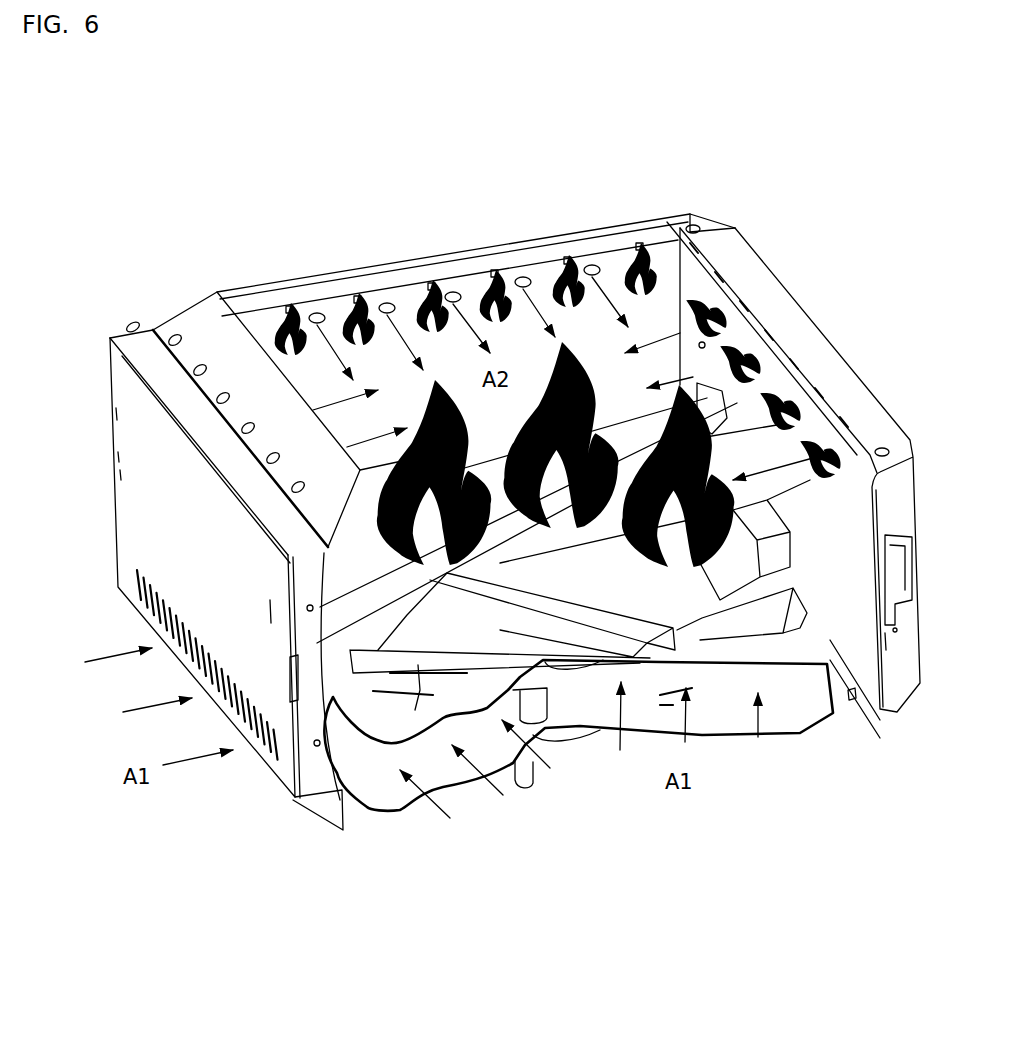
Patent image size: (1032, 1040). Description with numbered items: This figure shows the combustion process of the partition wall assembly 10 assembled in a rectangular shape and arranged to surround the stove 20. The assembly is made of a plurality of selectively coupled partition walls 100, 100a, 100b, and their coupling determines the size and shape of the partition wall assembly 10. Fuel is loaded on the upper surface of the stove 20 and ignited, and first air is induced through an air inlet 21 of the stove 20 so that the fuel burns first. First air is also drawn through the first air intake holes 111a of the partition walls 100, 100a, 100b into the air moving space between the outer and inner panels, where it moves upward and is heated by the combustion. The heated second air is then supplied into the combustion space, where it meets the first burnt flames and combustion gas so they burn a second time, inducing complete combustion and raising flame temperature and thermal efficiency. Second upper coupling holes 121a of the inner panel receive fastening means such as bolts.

The partition wall assembly 10 is at (684, 166).
The partition wall 100 is at (808, 337).
The partition wall 100a is at (183, 316).
The partition wall 100b is at (145, 500).
The first air intake holes 111a is at (140, 618).
The second upper coupling holes 121a is at (597, 270).
The stove 20 is at (520, 677).
The air inlet 21 is at (423, 695).